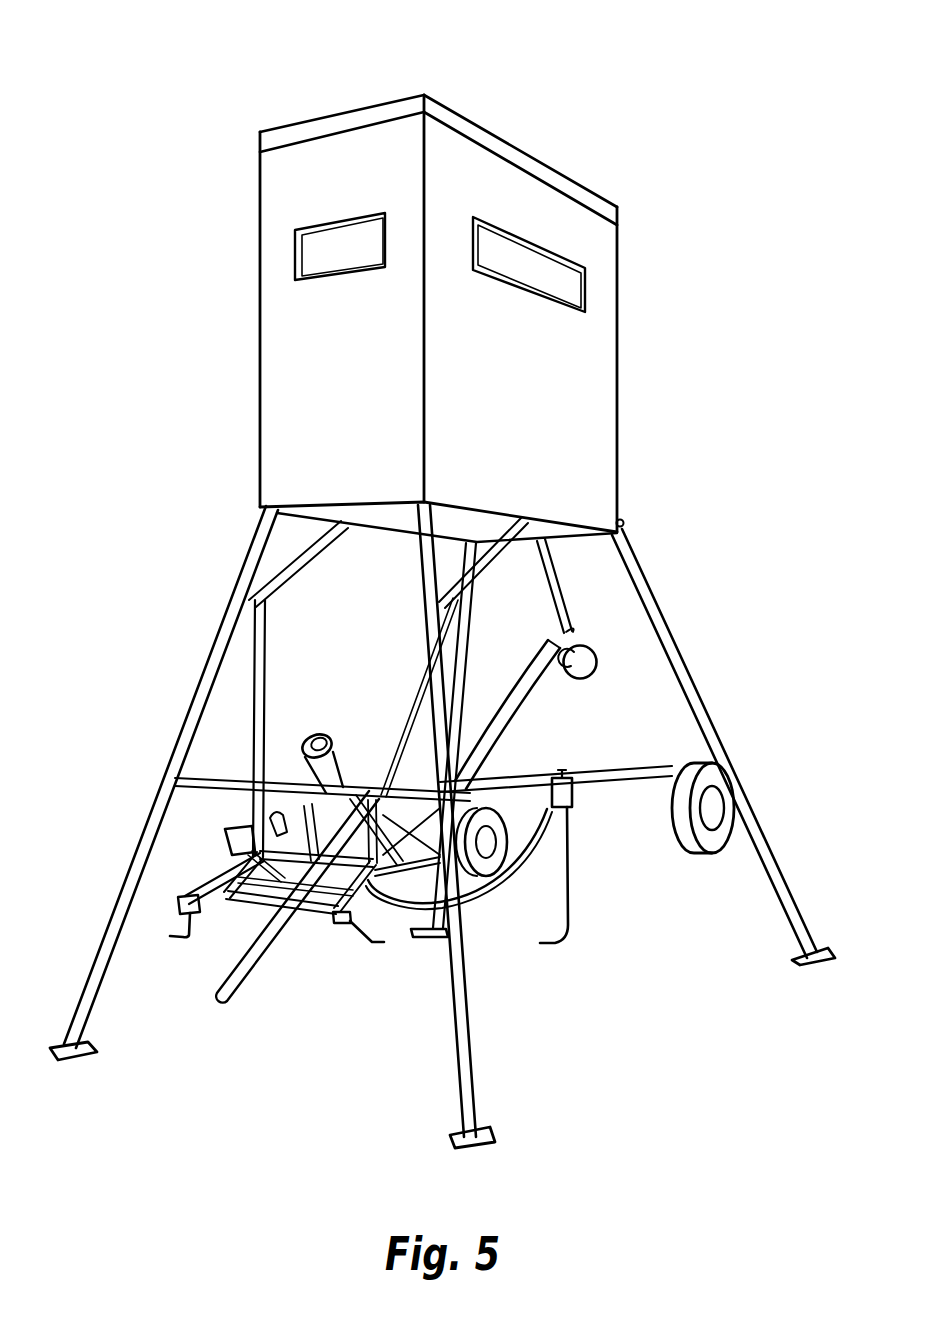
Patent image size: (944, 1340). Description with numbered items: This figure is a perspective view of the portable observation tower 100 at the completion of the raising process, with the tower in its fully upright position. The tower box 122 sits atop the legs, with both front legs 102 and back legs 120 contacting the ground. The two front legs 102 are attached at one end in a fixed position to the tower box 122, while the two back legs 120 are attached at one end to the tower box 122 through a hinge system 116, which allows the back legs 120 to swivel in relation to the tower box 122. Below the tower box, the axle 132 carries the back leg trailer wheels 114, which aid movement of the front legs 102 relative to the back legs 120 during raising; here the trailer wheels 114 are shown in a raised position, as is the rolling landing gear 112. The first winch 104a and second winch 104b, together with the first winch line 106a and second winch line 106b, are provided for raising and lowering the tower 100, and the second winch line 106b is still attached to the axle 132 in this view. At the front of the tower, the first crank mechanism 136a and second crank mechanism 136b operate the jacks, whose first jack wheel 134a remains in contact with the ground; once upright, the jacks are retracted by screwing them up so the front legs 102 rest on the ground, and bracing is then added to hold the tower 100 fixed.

The portable observation tower 100 is at (143, 153).
The front legs 102 is at (210, 672).
The first winch 104a is at (333, 748).
The second winch 104b is at (250, 821).
The first winch line 106a is at (517, 708).
The second winch line 106b is at (517, 848).
The rolling landing gear 112 is at (560, 612).
The back leg trailer wheels 114 is at (683, 830).
The hinge system 116 is at (623, 519).
The back legs 120 is at (464, 688).
The tower box 122 is at (532, 155).
The axle 132 is at (596, 767).
The first jack wheel 134a is at (552, 790).
The first crank mechanism 136a is at (355, 935).
The second crank mechanism 136b is at (170, 932).